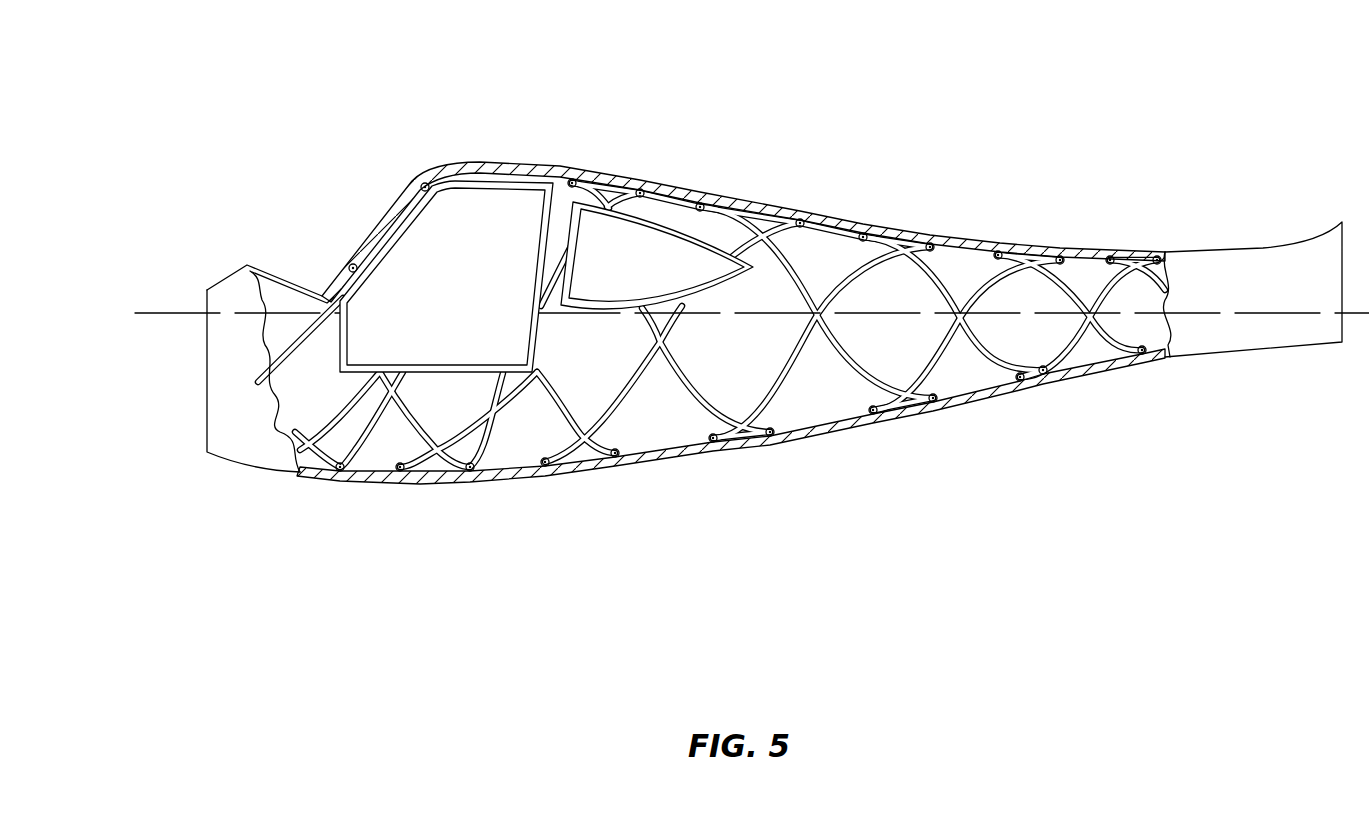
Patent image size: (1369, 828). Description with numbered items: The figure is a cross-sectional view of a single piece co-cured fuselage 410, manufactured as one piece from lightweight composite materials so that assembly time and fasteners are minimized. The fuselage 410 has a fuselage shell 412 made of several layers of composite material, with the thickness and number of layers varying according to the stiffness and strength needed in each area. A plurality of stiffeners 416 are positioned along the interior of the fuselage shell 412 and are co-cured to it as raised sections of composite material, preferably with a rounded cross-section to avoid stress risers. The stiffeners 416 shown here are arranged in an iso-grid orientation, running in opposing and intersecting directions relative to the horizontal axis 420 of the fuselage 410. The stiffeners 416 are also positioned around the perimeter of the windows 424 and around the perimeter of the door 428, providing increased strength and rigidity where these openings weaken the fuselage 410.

The single piece co-cured fuselage 410 is at (1016, 184).
The fuselage shell 412 is at (1193, 335).
The stiffeners 416 is at (352, 236).
The horizontal axis 420 is at (156, 316).
The windows 424 is at (607, 203).
The door 428 is at (483, 210).